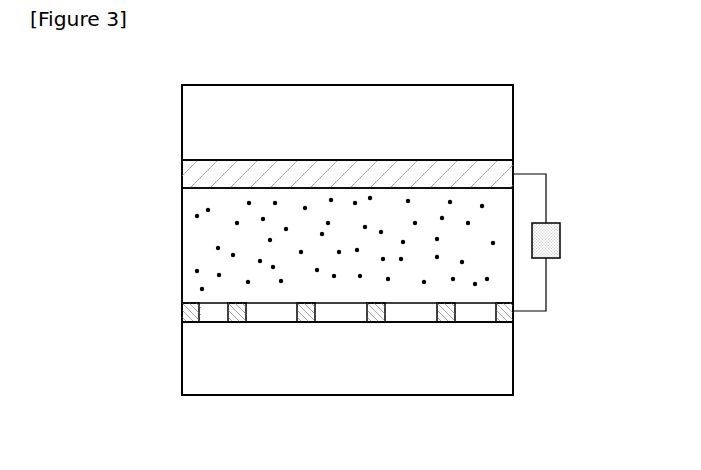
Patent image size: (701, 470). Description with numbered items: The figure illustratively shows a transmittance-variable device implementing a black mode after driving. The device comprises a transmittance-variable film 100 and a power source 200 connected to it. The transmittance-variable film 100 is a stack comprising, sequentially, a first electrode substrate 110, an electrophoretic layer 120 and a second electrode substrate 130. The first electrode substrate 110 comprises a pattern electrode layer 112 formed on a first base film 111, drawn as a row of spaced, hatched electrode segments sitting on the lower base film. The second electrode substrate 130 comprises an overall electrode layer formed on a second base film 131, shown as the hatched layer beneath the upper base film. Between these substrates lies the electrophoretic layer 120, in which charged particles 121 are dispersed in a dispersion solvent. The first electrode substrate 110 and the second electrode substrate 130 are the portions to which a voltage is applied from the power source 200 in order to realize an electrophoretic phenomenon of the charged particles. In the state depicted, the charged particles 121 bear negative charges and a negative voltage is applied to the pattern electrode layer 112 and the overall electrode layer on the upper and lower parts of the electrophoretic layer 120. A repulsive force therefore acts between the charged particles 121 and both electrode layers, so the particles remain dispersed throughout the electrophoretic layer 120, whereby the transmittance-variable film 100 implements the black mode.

The transmittance-variable film 100 is at (86, 142).
The first electrode substrate 110 is at (128, 305).
The first base film 111 is at (192, 362).
The pattern electrode layer 112 is at (187, 313).
The electrophoretic layer 120 is at (192, 243).
The charged particles 121 is at (195, 216).
The second electrode substrate 130 is at (128, 117).
The second base film 131 is at (193, 123).
The power source 200 is at (561, 241).